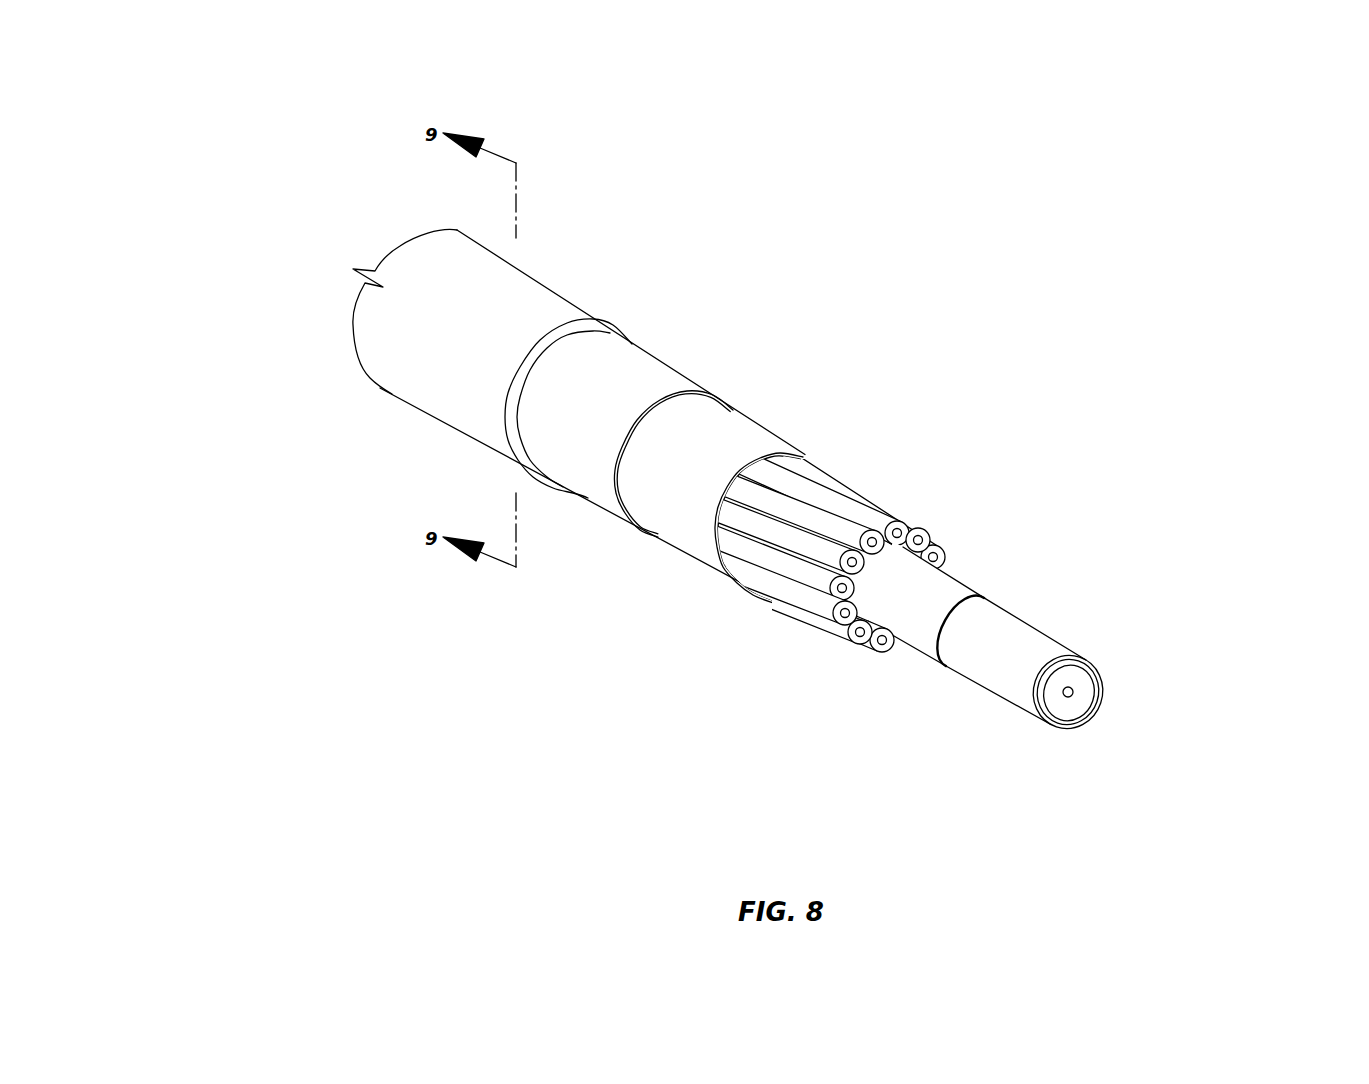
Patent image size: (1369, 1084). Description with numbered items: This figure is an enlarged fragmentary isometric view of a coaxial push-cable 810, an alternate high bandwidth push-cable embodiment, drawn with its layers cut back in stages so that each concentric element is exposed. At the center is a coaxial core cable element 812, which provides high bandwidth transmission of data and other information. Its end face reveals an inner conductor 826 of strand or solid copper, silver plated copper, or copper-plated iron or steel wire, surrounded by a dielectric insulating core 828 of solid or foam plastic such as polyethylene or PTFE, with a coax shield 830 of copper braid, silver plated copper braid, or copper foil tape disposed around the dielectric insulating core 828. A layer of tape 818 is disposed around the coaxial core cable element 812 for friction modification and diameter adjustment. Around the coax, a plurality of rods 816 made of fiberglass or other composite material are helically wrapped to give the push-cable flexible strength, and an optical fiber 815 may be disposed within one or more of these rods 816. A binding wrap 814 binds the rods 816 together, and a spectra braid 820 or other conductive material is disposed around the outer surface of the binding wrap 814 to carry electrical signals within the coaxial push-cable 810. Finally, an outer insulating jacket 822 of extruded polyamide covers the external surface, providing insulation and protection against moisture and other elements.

The coaxial push-cable 810 is at (344, 121).
The coaxial core cable element 812 is at (1068, 675).
The binding wrap 814 is at (765, 445).
The optical fiber 815 is at (845, 617).
The rods 816 is at (930, 608).
The layer of tape 818 is at (947, 590).
The spectra braid 820 is at (665, 378).
The outer insulating jacket 822 is at (562, 300).
The inner conductor 826 is at (1075, 694).
The dielectric insulating core 828 is at (1073, 677).
The coax shield 830 is at (1057, 730).